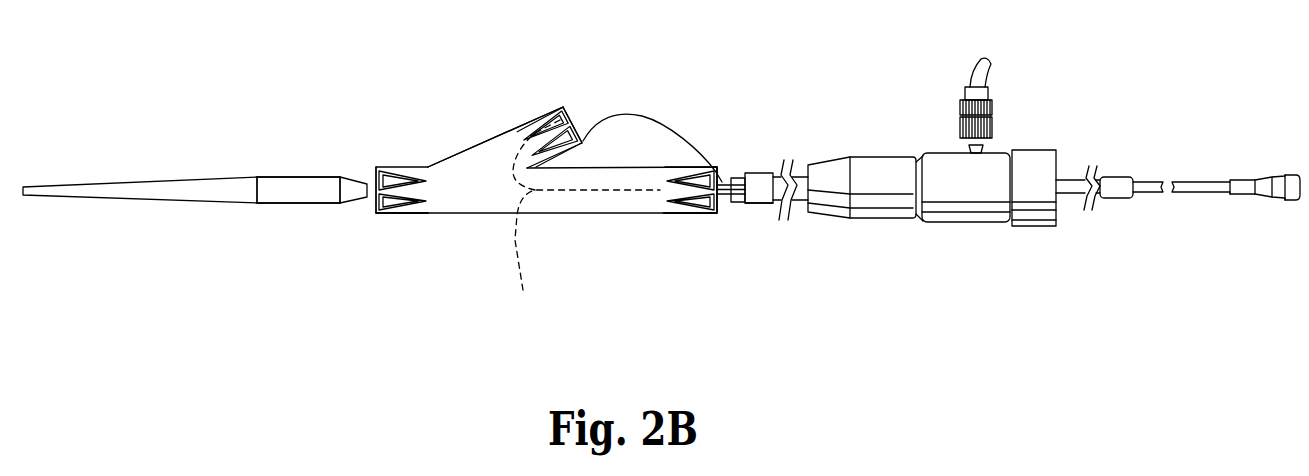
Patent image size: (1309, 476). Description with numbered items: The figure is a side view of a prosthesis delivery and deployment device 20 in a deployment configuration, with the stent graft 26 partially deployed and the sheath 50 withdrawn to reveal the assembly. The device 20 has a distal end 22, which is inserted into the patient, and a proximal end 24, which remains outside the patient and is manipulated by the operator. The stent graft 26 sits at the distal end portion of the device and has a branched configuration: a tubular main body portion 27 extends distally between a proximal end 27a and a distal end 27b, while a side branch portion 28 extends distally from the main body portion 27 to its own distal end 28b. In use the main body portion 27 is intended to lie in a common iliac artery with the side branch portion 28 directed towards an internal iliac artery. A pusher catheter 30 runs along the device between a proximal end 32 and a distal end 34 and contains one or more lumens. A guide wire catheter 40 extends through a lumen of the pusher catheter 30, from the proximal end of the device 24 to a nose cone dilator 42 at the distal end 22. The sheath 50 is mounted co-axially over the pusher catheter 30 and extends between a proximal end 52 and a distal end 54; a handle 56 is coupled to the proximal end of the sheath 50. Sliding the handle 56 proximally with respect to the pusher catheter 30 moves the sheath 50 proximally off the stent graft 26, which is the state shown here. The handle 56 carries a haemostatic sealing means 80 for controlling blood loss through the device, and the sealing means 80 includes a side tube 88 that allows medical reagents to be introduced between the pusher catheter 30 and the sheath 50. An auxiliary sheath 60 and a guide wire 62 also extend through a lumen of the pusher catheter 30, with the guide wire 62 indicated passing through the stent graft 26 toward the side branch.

The delivery and deployment device 20 is at (1031, 88).
The distal end 22 is at (104, 153).
The proximal end 24 is at (1200, 229).
The stent graft 26 is at (476, 137).
The main body portion 27 is at (470, 204).
The proximal end 27a is at (405, 214).
The distal end 27b is at (713, 216).
The handle portion 28 is at (548, 112).
The distal end 28b is at (565, 106).
The pusher catheter 30 is at (1066, 196).
The proximal end 32 is at (1131, 169).
The distal end 34 is at (750, 208).
The guide wire catheter 40 is at (372, 170).
The nose cone dilator 42 is at (295, 204).
The sheath 50 is at (793, 171).
The proximal end 52 is at (899, 230).
The distal end 54 is at (764, 169).
The handle 56 is at (940, 152).
The auxiliary sheath 60 is at (734, 177).
The guide wire 62 is at (586, 218).
The haemostatic sealing means 80 is at (1031, 165).
The side tube 88 is at (986, 57).